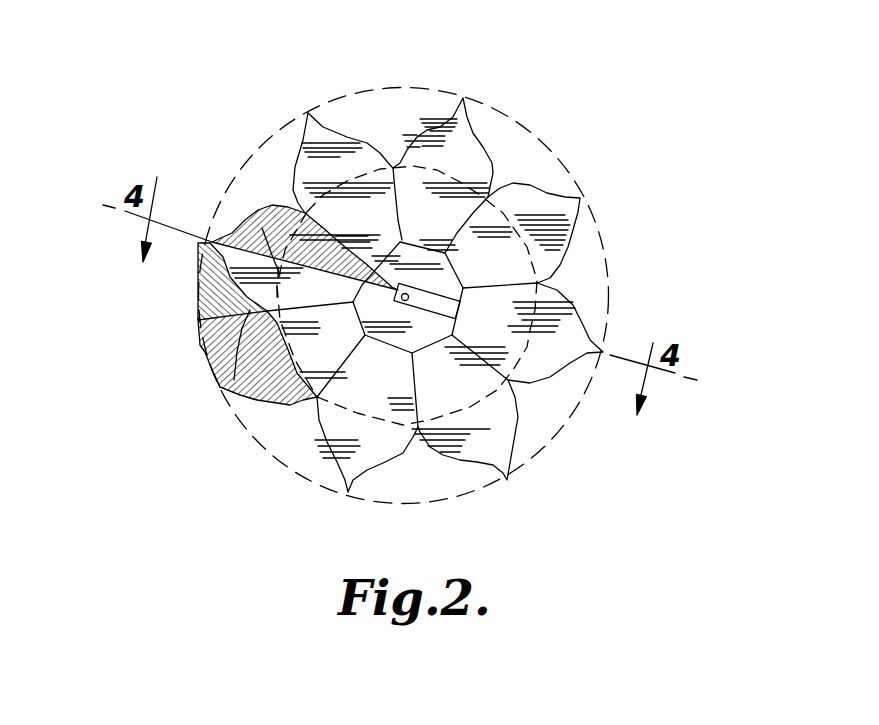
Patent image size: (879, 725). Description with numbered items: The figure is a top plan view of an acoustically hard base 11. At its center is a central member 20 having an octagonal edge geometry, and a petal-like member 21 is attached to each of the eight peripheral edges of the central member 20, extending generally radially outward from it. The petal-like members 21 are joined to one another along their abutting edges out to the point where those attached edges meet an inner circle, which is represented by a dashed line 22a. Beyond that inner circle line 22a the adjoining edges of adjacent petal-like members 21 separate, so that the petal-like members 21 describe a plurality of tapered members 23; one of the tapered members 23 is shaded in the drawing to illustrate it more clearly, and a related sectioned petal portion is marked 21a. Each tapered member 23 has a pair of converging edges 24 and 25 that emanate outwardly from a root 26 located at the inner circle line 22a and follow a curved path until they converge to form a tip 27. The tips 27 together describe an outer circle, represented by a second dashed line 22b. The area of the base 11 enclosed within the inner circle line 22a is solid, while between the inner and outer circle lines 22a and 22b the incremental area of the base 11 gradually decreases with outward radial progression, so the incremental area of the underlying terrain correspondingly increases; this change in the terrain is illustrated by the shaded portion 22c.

The acoustically hard base 11 is at (588, 65).
The central member 20 is at (408, 250).
The petal-like member 21 is at (435, 197).
The sectioned upper petal 21a is at (262, 227).
The inner circle dashed line 22a is at (563, 190).
The outer circle dashed line 22b is at (595, 222).
The shaded portion 22c is at (217, 333).
The tapered member 23 is at (543, 342).
The converging edge 24 is at (221, 382).
The converging edge 25 is at (257, 401).
The root 26 is at (200, 322).
The tip 27 is at (222, 395).